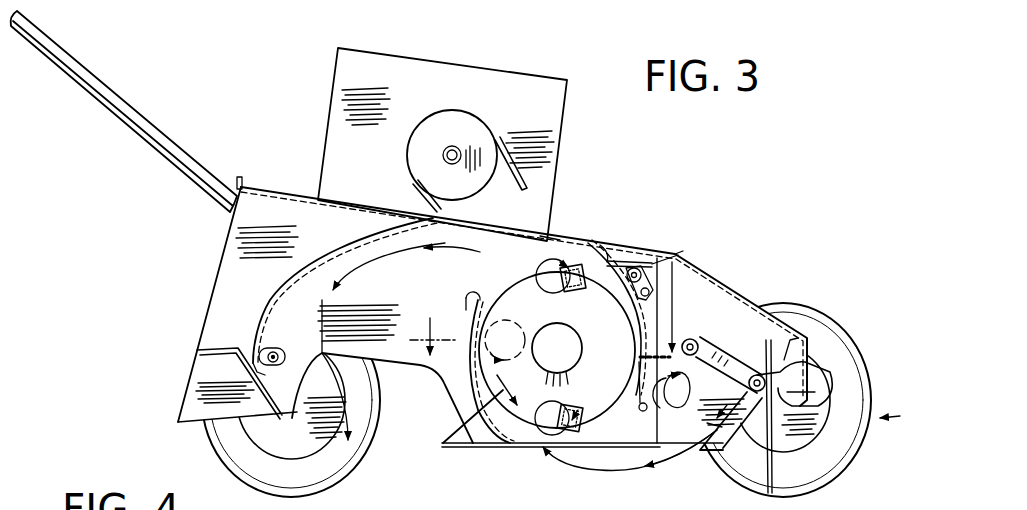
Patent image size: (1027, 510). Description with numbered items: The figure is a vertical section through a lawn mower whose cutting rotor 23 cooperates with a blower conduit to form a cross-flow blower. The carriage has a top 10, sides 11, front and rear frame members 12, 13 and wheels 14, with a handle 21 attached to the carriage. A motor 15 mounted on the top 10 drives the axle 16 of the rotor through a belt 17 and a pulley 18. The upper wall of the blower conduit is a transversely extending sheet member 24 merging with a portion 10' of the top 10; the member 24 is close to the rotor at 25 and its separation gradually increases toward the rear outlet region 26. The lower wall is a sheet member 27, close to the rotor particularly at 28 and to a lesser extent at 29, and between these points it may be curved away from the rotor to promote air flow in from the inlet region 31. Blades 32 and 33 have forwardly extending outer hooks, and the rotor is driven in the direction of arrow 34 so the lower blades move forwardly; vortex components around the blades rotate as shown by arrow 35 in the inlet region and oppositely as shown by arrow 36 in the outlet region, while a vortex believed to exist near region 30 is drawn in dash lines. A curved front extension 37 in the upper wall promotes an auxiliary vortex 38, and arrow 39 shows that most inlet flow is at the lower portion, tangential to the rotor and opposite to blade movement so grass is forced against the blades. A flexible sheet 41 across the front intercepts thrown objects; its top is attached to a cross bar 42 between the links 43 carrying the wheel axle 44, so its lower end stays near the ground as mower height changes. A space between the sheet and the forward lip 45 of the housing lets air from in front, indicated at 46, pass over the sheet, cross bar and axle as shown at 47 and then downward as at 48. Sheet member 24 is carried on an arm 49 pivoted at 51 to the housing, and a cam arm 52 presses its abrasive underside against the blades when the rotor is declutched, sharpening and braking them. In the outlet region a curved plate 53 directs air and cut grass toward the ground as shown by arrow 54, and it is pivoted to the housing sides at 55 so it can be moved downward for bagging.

The top 10 is at (492, 287).
The portion of the top 10' is at (531, 220).
The sides 11 is at (402, 364).
The front frame member 12 is at (815, 358).
The rear frame member 13 is at (185, 387).
The wheels 14 is at (335, 468).
The motor 15 is at (528, 70).
The axle 16 is at (568, 322).
The belt 17 is at (525, 170).
The pulley 18 is at (443, 118).
The handle 21 is at (132, 104).
The rotor 23 is at (608, 246).
The sheet member 24 is at (670, 312).
The close region of member 24 25 is at (627, 342).
The rear outlet region 26 is at (494, 270).
The sheet member 27 is at (462, 313).
The close region of member 27 28 is at (488, 292).
The close region of member 27 29 is at (520, 448).
The vortex region 30 is at (505, 340).
The inlet region 31 is at (616, 441).
The blade 32 is at (580, 404).
The blade 33 is at (572, 240).
The arrow 34 is at (475, 412).
The arrow 35 is at (552, 400).
The arrow 36 is at (577, 300).
The curved front extension 37 is at (697, 345).
The auxiliary vortex 38 is at (673, 391).
The arrow 39 is at (593, 471).
The sheet 41 is at (772, 490).
The cross bar 42 is at (745, 437).
The links 43 is at (708, 330).
The axle 44 is at (790, 392).
The forward lip 45 is at (818, 401).
The air from in front of the mower 46 is at (850, 432).
The air flow over sheet and cross-bar 47 is at (750, 353).
The downward air flow 48 is at (703, 422).
The arm 49 is at (625, 360).
The pivot 51 is at (638, 407).
The cam arm 52 is at (690, 258).
The curved plate 53 is at (275, 271).
The arrow 54 is at (357, 276).
The pivot 55 is at (278, 348).